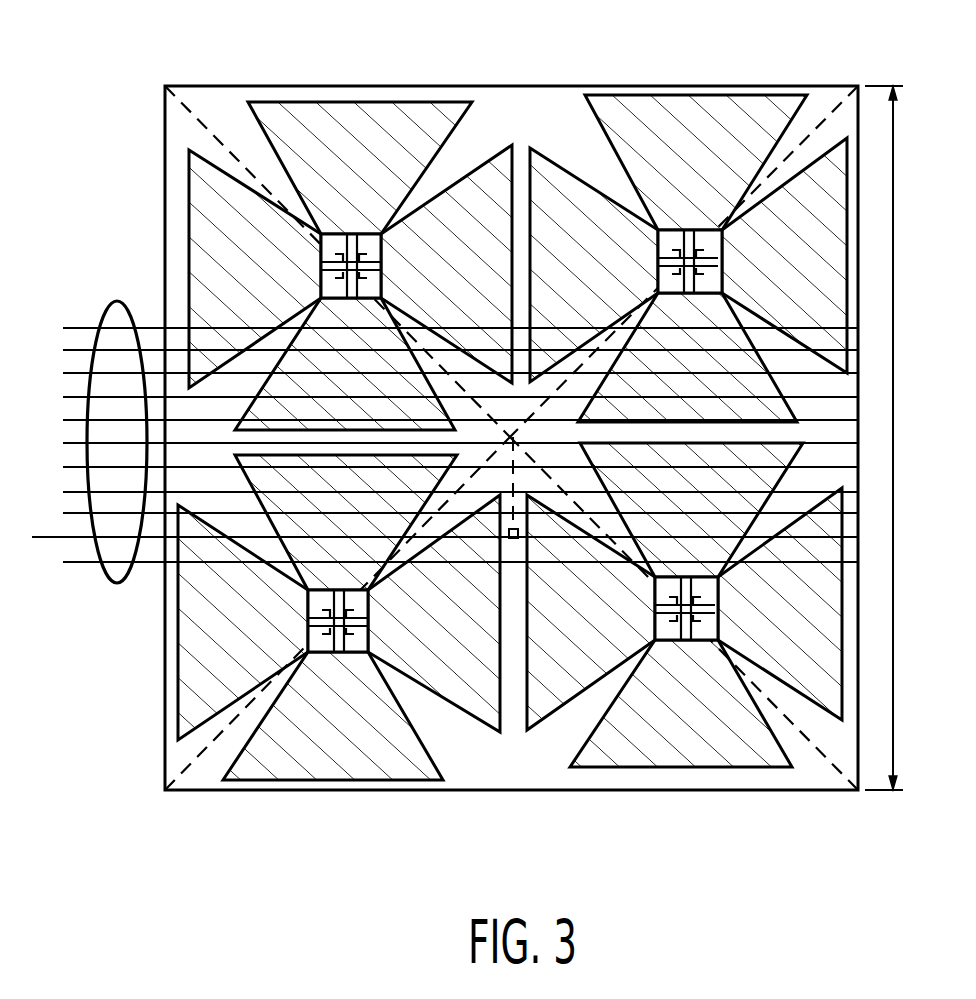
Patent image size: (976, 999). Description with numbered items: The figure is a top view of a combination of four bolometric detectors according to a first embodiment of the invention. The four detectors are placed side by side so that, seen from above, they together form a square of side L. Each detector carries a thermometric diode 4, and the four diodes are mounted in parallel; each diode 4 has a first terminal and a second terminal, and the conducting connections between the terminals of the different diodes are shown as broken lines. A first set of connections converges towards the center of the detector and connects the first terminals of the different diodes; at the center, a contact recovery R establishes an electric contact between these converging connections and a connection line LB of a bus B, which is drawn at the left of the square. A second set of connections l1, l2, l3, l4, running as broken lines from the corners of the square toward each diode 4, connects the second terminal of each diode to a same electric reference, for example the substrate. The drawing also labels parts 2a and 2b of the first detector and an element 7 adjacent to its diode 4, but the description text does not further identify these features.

The connection l1 is at (209, 118).
The connection l2 is at (840, 104).
The connection l3 is at (200, 760).
The connection l4 is at (844, 758).
The first antenna lobe 2a is at (208, 204).
The second antenna lobe 2b is at (335, 123).
The diode 4 is at (362, 246).
The bond pad 7 is at (322, 282).
The side of the square L is at (895, 438).
The contact recovery R is at (513, 539).
The connection line LB is at (60, 538).
The bus B is at (117, 584).